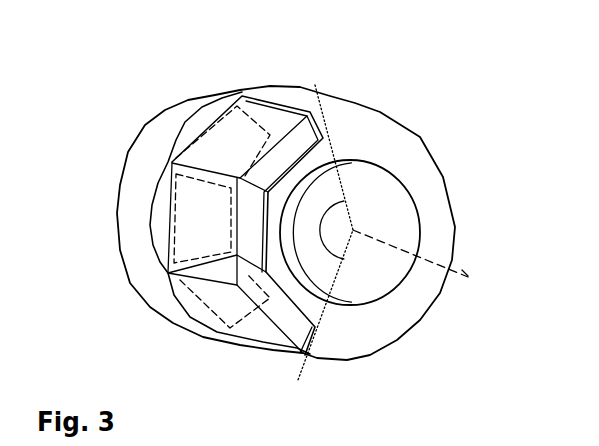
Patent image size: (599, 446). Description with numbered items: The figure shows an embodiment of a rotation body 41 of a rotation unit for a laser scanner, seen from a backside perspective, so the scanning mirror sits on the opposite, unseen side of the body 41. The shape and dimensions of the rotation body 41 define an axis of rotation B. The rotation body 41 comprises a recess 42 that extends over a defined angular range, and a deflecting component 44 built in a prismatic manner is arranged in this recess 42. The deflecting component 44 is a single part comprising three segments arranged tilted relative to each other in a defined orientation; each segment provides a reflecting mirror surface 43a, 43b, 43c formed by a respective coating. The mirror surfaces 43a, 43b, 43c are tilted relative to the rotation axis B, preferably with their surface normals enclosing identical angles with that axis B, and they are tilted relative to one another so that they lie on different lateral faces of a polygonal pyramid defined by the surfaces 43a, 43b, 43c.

The rotation body 41 is at (388, 135).
The recess 42 is at (202, 118).
The mirror surface 43a is at (223, 137).
The mirror surface 43b is at (188, 220).
The mirror surface 43c is at (220, 297).
The deflecting component 44 is at (268, 115).
The axis of rotation B is at (462, 270).